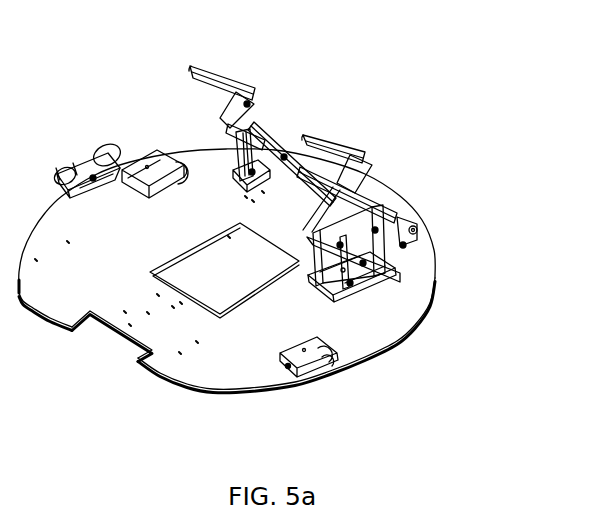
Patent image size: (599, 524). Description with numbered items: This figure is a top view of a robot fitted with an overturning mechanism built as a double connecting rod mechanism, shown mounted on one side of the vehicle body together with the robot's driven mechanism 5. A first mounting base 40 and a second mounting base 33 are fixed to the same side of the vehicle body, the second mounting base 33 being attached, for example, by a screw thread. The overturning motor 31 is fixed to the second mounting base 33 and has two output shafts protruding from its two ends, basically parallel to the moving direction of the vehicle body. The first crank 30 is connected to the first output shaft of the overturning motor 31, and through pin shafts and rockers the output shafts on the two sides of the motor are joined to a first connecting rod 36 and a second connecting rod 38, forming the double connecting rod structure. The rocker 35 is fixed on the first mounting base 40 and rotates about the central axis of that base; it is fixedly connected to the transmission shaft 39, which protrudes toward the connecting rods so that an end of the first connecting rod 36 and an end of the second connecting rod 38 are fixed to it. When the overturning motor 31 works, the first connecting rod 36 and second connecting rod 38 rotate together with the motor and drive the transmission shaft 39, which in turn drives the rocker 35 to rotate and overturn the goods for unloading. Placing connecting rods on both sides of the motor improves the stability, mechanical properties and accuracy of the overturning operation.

The driven mechanism 5 is at (90, 166).
The first crank 30 is at (381, 200).
The overturning motor 31 is at (353, 147).
The second mounting base 33 is at (393, 277).
The rocker 35 is at (247, 103).
The first connecting rod 36 is at (423, 230).
The second connecting rod 38 is at (315, 226).
The transmission shaft 39 is at (284, 156).
The first mounting base 40 is at (238, 150).